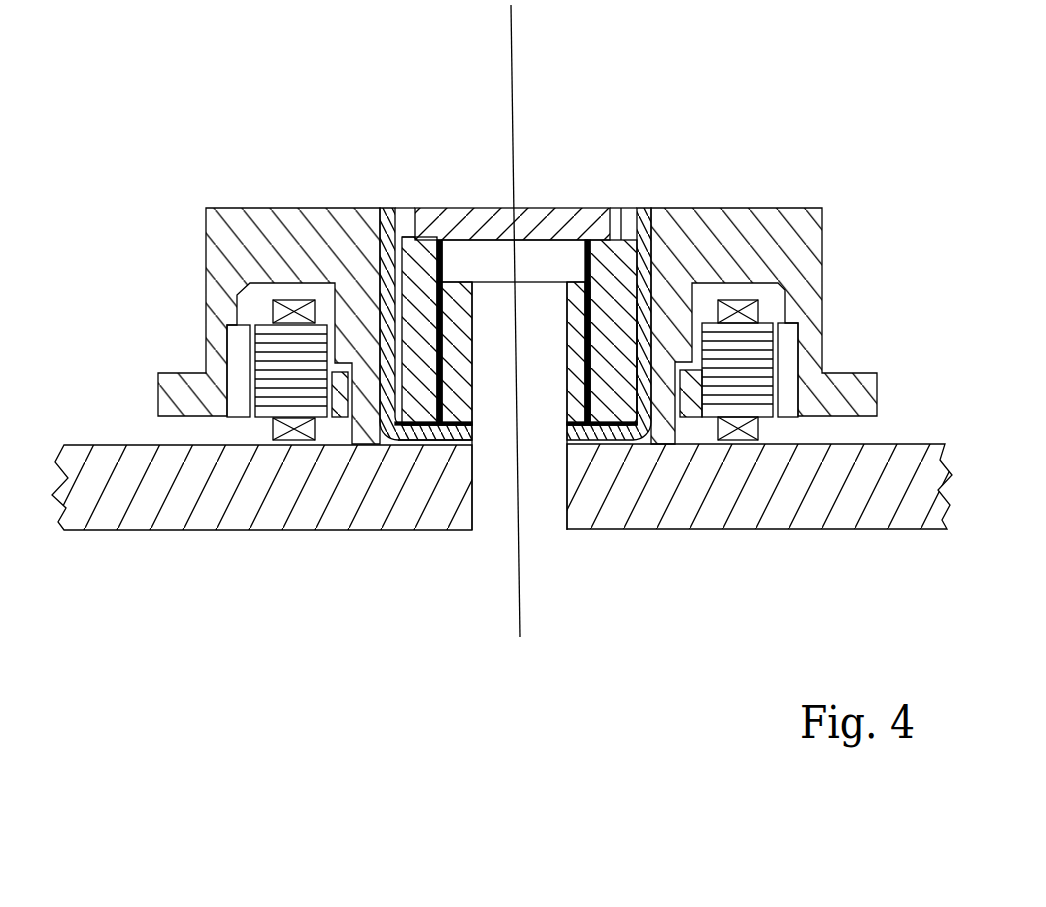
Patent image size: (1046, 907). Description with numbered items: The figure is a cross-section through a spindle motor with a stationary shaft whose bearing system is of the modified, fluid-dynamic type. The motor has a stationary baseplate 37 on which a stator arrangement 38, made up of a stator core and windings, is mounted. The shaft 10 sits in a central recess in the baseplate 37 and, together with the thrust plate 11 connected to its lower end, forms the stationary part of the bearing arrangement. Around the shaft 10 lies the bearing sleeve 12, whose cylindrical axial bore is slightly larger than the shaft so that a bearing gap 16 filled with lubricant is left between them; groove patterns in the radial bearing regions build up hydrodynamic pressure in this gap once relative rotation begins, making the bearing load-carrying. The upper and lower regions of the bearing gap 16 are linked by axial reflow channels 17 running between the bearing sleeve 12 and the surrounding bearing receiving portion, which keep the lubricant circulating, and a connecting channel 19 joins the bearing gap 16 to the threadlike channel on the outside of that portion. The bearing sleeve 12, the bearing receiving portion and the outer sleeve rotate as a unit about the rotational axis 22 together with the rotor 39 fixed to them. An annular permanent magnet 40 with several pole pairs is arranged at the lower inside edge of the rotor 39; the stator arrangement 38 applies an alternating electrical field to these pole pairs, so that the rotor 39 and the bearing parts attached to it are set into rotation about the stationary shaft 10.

The shaft 10 is at (547, 520).
The thrust plate 11 is at (478, 255).
The bearing sleeve 12 is at (590, 297).
The bearing gap 16 is at (457, 427).
The reflow channels 17 is at (630, 358).
The connecting channel 19 is at (413, 430).
The rotational axis 22 is at (512, 12).
The baseplate 37 is at (232, 530).
The stator arrangement 38 is at (290, 398).
The rotor 39 is at (239, 222).
The annular permanent magnet 40 is at (242, 342).